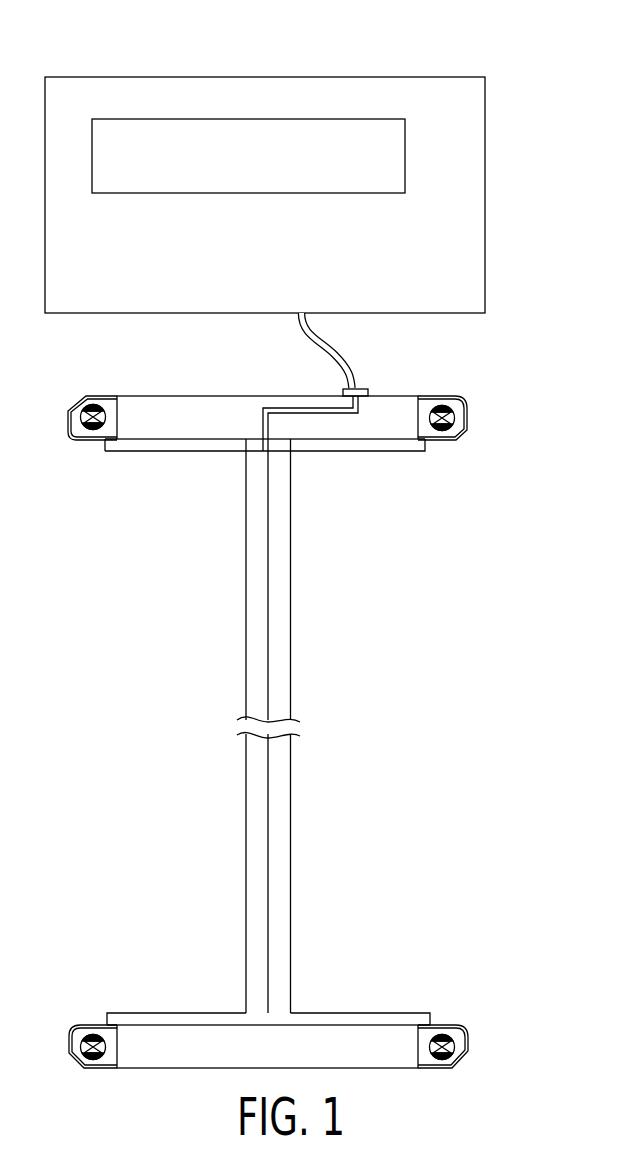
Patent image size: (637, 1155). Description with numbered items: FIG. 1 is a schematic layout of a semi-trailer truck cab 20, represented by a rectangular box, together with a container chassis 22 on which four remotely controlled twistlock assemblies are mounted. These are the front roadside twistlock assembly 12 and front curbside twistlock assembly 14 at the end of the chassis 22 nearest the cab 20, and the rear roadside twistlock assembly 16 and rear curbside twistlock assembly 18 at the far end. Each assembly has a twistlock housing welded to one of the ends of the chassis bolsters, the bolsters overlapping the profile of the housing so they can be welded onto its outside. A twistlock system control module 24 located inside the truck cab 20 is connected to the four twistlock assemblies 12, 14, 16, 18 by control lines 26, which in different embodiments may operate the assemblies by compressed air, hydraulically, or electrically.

The front roadside twistlock assembly 12 is at (95, 393).
The front curbside twistlock assembly 14 is at (438, 396).
The rear roadside twistlock assembly 16 is at (97, 1020).
The rear curbside twistlock assembly 18 is at (438, 1023).
The semi-trailer truck cab 20 is at (466, 77).
The container chassis 22 is at (291, 872).
The twistlock system control module 24 is at (405, 167).
The control lines 26 is at (373, 1013).